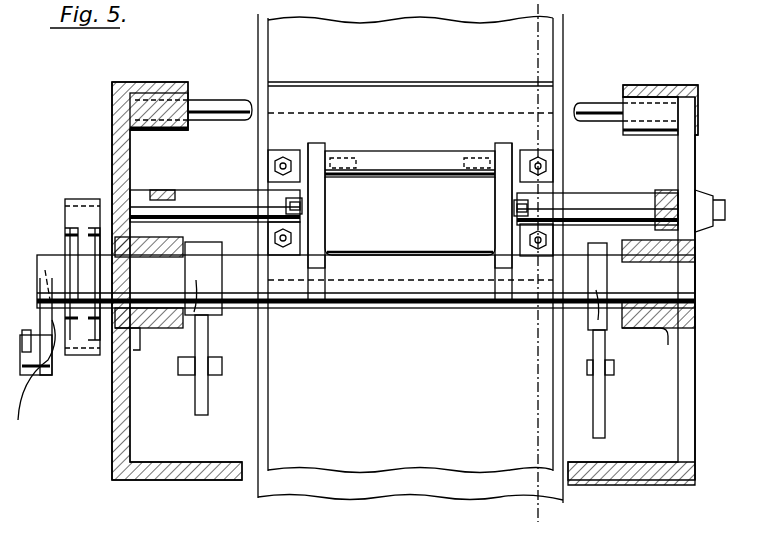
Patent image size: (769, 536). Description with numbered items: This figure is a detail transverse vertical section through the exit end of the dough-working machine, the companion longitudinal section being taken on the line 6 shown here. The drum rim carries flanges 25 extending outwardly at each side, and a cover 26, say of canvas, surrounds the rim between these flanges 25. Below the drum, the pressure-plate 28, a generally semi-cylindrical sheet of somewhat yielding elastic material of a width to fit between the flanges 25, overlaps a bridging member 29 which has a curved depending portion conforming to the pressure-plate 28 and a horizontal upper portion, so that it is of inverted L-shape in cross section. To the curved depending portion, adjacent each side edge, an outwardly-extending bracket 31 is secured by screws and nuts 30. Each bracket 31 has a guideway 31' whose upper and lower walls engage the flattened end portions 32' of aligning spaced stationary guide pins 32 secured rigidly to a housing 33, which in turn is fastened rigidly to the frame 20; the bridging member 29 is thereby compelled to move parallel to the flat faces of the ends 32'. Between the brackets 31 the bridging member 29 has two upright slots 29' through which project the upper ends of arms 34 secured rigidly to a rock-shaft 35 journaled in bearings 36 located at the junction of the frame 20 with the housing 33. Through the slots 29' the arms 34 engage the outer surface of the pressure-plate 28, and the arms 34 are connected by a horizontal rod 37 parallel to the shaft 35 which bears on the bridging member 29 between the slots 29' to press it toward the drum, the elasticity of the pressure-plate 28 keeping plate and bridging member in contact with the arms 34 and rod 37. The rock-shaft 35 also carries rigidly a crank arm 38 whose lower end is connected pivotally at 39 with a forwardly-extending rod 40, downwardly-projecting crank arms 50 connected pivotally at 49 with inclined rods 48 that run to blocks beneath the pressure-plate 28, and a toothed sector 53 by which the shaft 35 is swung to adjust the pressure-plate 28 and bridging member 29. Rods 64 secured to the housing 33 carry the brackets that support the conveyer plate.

The section line 6 is at (560, 10).
The frame 20 is at (122, 416).
The flanges 25 is at (564, 43).
The cover 26 is at (440, 508).
The pressure plate 28 is at (411, 384).
The bridging member 29 is at (410, 181).
The slots 29' is at (410, 212).
The screws and nuts 30 is at (284, 160).
The bracket 31 is at (411, 160).
The guideway 31' is at (407, 208).
The guide pins 32 is at (427, 194).
The flattened end portions 32' is at (408, 225).
The housing 33 is at (122, 152).
The arms 34 is at (318, 238).
The rock-shaft 35 is at (50, 268).
The bearings 36 is at (640, 328).
The horizontal rod 37 is at (410, 177).
The crank arm 38 is at (38, 338).
The pivotal connection 39 is at (36, 373).
The forwardly-extending rod 40 is at (25, 340).
The rods 48 is at (196, 396).
The pivotal connection 49 is at (590, 368).
The crank arms 50 is at (205, 328).
The toothed sector 53 is at (82, 215).
The rods 64 is at (218, 108).